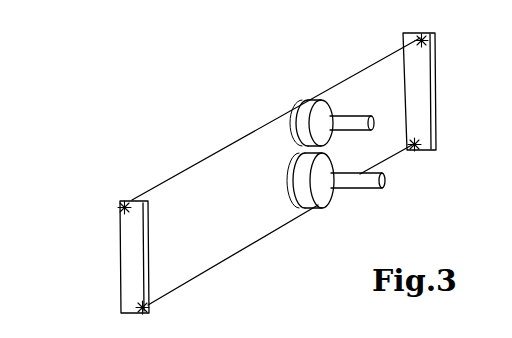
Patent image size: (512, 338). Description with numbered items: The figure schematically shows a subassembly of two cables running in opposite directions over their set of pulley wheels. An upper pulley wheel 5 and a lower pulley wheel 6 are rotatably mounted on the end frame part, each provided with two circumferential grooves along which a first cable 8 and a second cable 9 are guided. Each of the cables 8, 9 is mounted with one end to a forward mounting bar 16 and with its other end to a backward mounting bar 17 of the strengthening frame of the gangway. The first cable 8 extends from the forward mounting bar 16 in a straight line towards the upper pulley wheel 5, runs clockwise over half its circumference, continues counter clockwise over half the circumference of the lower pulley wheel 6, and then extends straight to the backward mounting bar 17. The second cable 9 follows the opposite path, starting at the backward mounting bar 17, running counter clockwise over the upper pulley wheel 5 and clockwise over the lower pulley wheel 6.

The upper pulley wheel 5 is at (300, 117).
The lower pulley wheel 6 is at (313, 206).
The first cable 8 is at (200, 157).
The second cable 9 is at (358, 72).
The forward mounting bar 16 is at (130, 257).
The backward mounting bar 17 is at (418, 95).